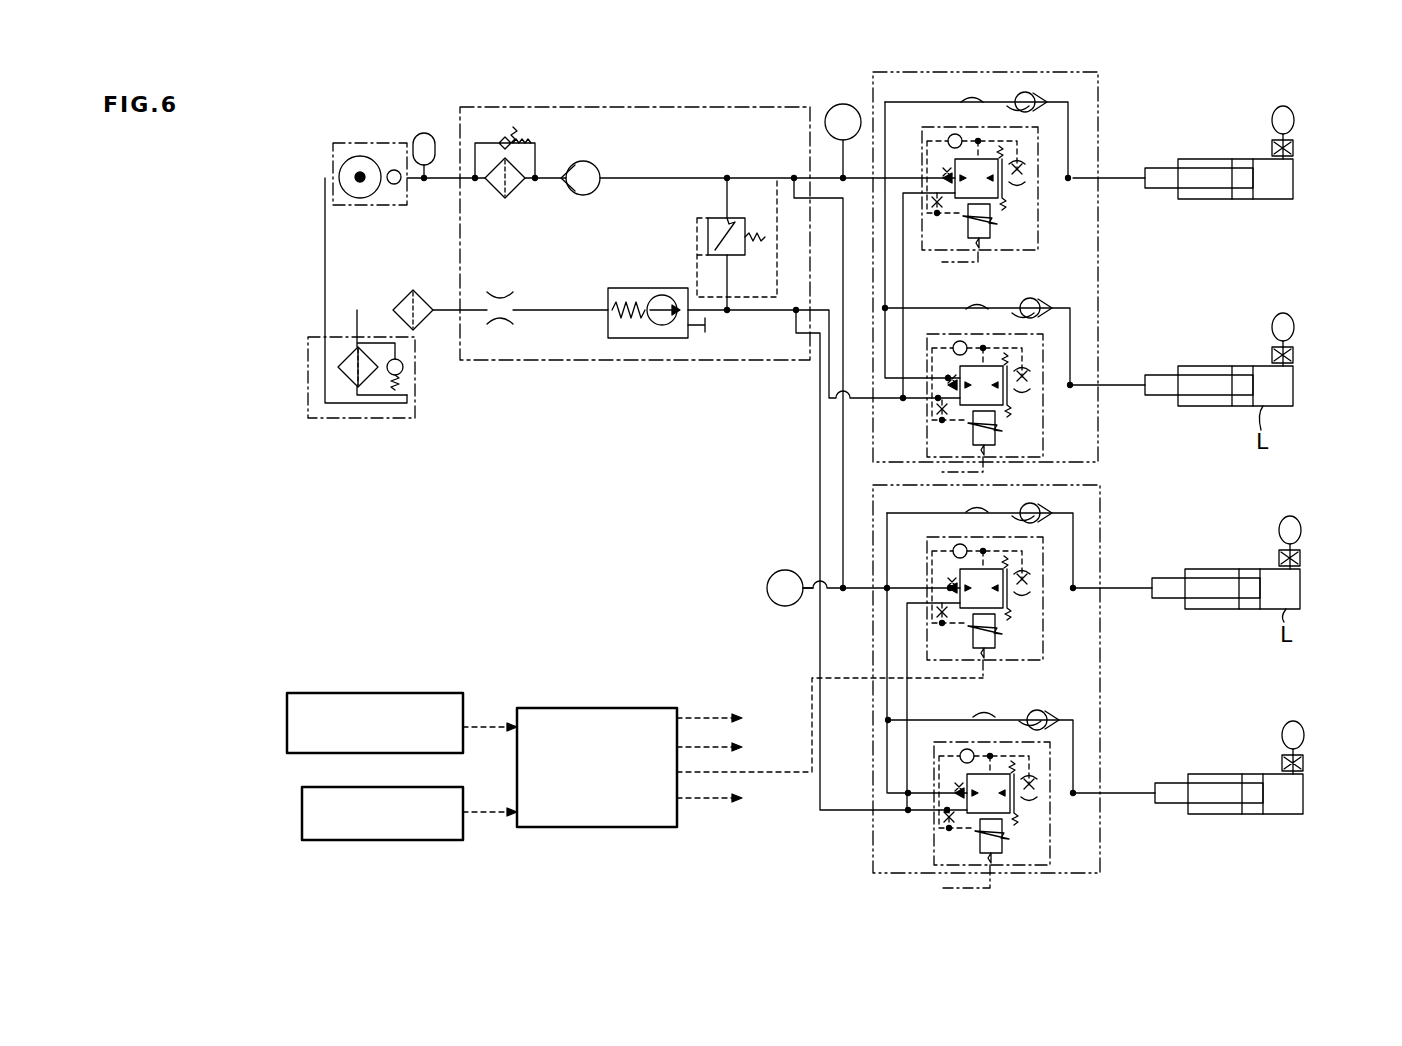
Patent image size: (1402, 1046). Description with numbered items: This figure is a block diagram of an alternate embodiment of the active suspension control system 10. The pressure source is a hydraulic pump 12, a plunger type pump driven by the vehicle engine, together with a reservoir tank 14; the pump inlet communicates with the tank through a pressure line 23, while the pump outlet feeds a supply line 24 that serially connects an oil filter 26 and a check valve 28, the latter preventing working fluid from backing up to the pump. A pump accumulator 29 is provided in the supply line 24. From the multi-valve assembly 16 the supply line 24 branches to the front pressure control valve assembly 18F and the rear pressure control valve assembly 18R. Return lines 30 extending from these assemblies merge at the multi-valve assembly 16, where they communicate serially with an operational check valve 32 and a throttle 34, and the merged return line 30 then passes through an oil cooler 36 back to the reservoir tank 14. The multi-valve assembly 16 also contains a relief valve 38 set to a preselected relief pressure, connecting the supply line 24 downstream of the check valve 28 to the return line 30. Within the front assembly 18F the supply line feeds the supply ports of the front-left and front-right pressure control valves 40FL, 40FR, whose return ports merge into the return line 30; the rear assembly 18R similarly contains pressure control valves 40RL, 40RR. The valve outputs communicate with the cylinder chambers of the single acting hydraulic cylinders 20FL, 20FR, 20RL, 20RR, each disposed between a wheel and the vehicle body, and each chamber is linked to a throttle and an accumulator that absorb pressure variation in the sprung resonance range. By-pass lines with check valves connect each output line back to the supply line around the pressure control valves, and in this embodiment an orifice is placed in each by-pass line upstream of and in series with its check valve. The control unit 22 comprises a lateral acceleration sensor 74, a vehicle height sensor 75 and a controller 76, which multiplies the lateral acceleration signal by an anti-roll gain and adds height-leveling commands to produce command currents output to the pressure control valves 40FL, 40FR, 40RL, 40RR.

The active suspension control system 10 is at (456, 509).
The hydraulic pump 12 is at (345, 143).
The reservoir tank 14 is at (308, 399).
The multi-valve assembly 16 is at (670, 362).
The front pressure control valve assembly 18F is at (1098, 268).
The rear pressure control valve assembly 18R is at (1100, 682).
The front-left hydraulic cylinder 20FL is at (1197, 155).
The front-right hydraulic cylinder 20FR is at (1207, 362).
The rear-left hydraulic cylinder 20RL is at (1202, 565).
The rear-right hydraulic cylinder 20RR is at (1212, 770).
The control unit 22 is at (479, 686).
The pressure line 23 is at (325, 268).
The supply line 24 is at (660, 178).
The oil filter 26 is at (518, 194).
The check valve 28 is at (588, 162).
The pump accumulator 29 is at (424, 133).
The return line 30 is at (762, 312).
The operational check valve 32 is at (632, 288).
The throttle 34 is at (501, 293).
The oil cooler 36 is at (405, 295).
The relief valve 38 is at (700, 240).
The front-left pressure control valve 40FL is at (988, 178).
The front-right pressure control valve 40FR is at (1023, 365).
The rear-left pressure control valve 40RL is at (1034, 574).
The rear-right pressure control valve 40RR is at (1034, 768).
The lateral acceleration sensor 74 is at (380, 693).
The vehicle height sensor 75 is at (302, 805).
The controller 76 is at (612, 708).